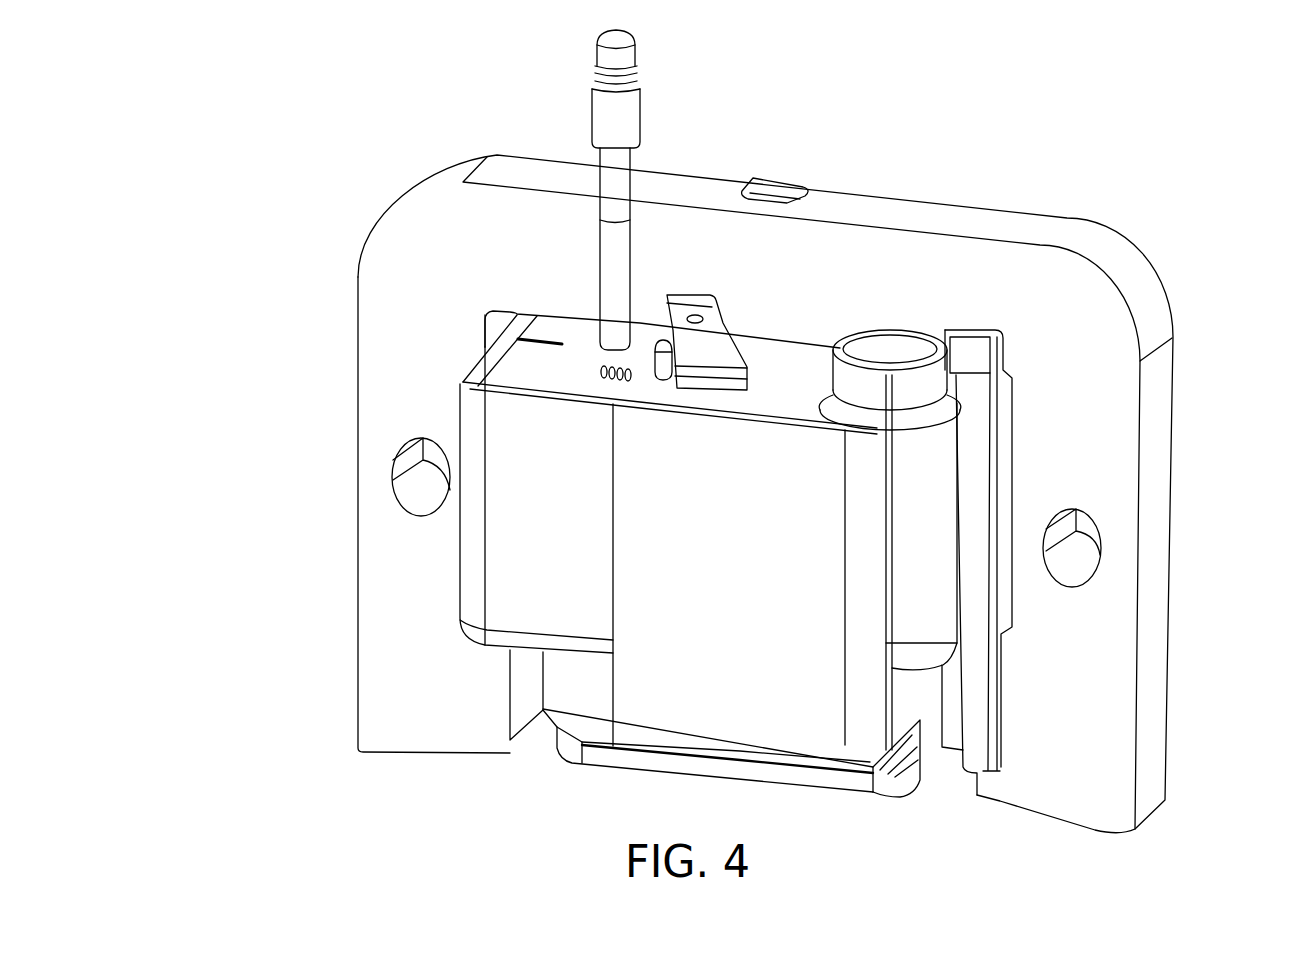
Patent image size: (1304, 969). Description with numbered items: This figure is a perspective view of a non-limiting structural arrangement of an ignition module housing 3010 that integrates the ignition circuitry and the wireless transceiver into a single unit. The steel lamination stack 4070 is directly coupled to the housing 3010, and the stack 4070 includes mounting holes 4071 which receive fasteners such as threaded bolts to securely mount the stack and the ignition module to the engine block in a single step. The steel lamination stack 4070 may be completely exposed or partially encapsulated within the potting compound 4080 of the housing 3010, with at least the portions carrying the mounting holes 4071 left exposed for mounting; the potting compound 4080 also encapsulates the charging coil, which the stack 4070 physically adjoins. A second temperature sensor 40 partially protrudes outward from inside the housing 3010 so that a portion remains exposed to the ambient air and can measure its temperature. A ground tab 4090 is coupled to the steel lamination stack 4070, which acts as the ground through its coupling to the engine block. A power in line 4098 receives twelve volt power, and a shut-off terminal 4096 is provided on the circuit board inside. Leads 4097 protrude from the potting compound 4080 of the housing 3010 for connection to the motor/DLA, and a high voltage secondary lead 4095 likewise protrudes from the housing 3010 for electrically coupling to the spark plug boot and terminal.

The second temperature sensor 40 is at (662, 338).
The ignition module housing 3010 is at (682, 777).
The steel lamination stack 4070 is at (354, 653).
The mounting holes 4071 is at (1101, 535).
The potting compound 4080 is at (565, 325).
The ground tab 4090 is at (778, 180).
The high voltage secondary lead 4095 is at (917, 337).
The shut-off terminal 4096 is at (723, 393).
The leads 4097 is at (485, 350).
The power in line 4098 is at (640, 107).